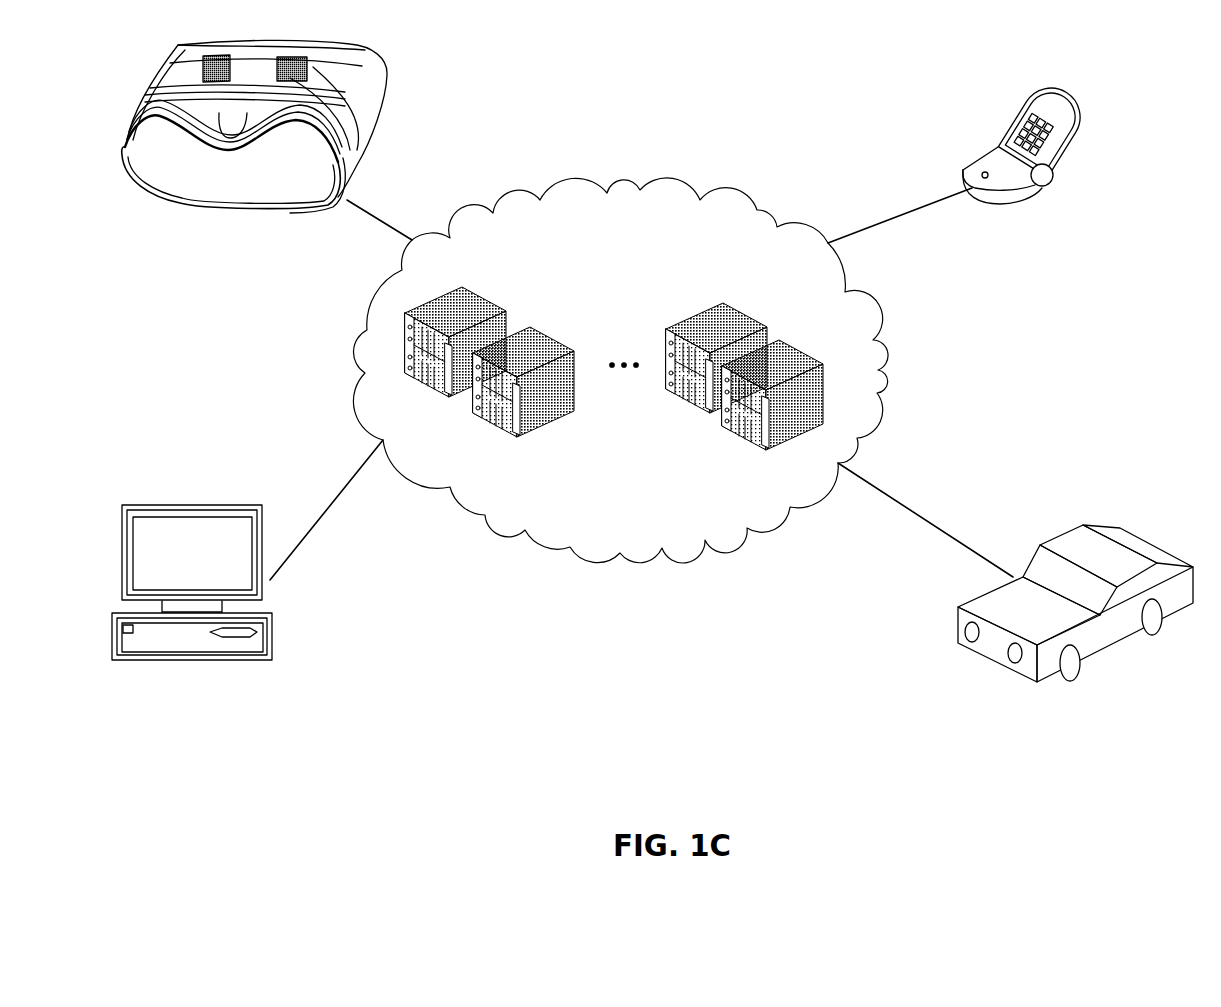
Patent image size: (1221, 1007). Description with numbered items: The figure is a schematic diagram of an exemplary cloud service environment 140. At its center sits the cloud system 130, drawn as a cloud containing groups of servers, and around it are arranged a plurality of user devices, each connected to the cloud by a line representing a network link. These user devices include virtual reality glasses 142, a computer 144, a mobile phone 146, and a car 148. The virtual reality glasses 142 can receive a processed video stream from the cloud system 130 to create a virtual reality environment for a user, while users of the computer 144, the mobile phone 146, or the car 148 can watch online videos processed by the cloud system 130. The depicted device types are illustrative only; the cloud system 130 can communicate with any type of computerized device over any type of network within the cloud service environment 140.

The cloud system 130 is at (620, 370).
The cloud service environment 140 is at (681, 727).
The virtual reality glasses 142 is at (254, 161).
The computer 144 is at (192, 614).
The mobile phone 146 is at (1027, 161).
The car 148 is at (1075, 632).